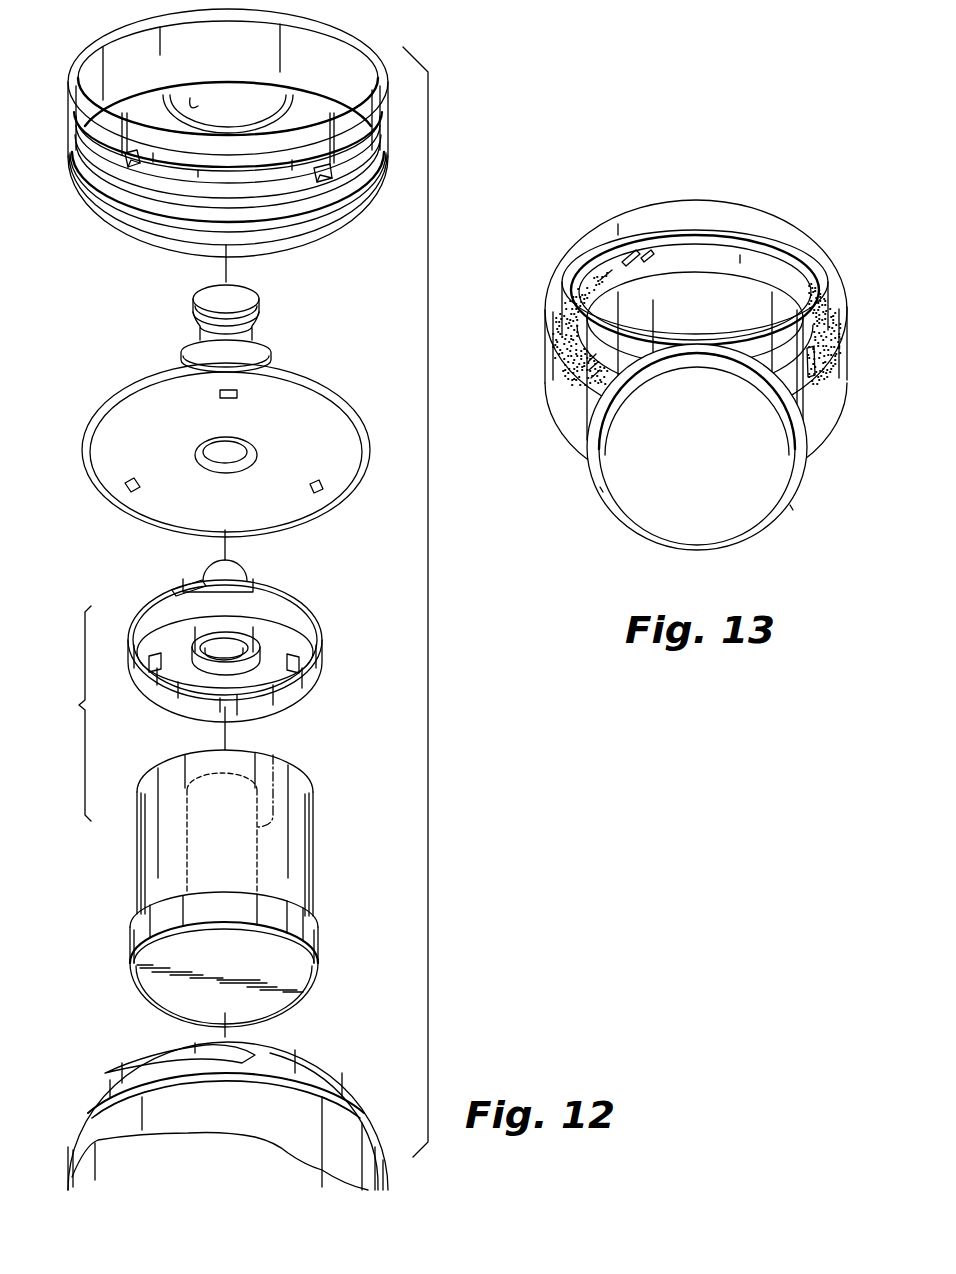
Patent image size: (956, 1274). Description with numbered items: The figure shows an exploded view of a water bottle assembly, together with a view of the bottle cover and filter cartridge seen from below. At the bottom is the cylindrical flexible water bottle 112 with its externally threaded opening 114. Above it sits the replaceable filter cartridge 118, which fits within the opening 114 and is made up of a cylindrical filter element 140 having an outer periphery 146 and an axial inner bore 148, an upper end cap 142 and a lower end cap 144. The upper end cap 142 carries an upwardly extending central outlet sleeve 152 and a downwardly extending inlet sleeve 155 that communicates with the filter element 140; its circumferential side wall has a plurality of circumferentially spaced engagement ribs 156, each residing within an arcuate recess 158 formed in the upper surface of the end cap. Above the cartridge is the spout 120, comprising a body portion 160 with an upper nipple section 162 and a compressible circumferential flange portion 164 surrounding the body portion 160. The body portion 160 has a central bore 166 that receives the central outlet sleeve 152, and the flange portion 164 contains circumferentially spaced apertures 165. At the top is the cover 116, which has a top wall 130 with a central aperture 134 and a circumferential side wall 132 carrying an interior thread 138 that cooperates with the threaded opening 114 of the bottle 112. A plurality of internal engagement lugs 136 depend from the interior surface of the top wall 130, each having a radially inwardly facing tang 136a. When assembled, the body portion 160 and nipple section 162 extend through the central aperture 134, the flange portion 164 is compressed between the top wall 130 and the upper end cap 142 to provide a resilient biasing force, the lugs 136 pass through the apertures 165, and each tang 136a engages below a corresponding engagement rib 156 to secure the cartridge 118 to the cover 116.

In FIG. 12, the water bottle 112 is at (63, 1147).
In FIG. 12, the externally threaded opening 114 is at (126, 1068).
In FIG. 12, the cover 116 is at (60, 100).
In FIG. 13, the cover 116 is at (748, 205).
In FIG. 12, the replaceable filter cartridge 118 is at (68, 700).
In FIG. 13, the replaceable filter cartridge 118 is at (545, 207).
In FIG. 12, the spout 120 is at (153, 352).
In FIG. 13, the spout 120 is at (563, 393).
In FIG. 12, the top wall 130 is at (270, 125).
In FIG. 12, the circumferential side wall 132 is at (375, 111).
In FIG. 12, the central aperture 134 is at (194, 104).
In FIG. 12, the engagement lugs 136 is at (143, 137).
In FIG. 13, the engagement lugs 136 is at (632, 252).
In FIG. 12, the tang 136a is at (130, 167).
In FIG. 12, the interior thread 138 is at (150, 200).
In FIG. 12, the filter element 140 is at (330, 794).
In FIG. 13, the filter element 140 is at (687, 285).
In FIG. 12, the upper end cap 142 is at (327, 598).
In FIG. 12, the lower end cap 144 is at (325, 952).
In FIG. 13, the lower end cap 144 is at (590, 487).
In FIG. 12, the outer periphery 146 is at (310, 860).
In FIG. 12, the axial inner bore 148 is at (273, 757).
In FIG. 12, the central outlet sleeve 152 is at (215, 569).
In FIG. 12, the inlet sleeve 155 is at (192, 662).
In FIG. 12, the engagement ribs 156 is at (180, 586).
In FIG. 12, the arcuate recess 158 is at (241, 575).
In FIG. 13, the arcuate recess 158 is at (607, 276).
In FIG. 12, the body portion 160 is at (258, 334).
In FIG. 12, the upper nipple section 162 is at (262, 300).
In FIG. 12, the flange portion 164 is at (310, 382).
In FIG. 12, the apertures 165 is at (229, 398).
In FIG. 12, the central bore 166 is at (222, 450).